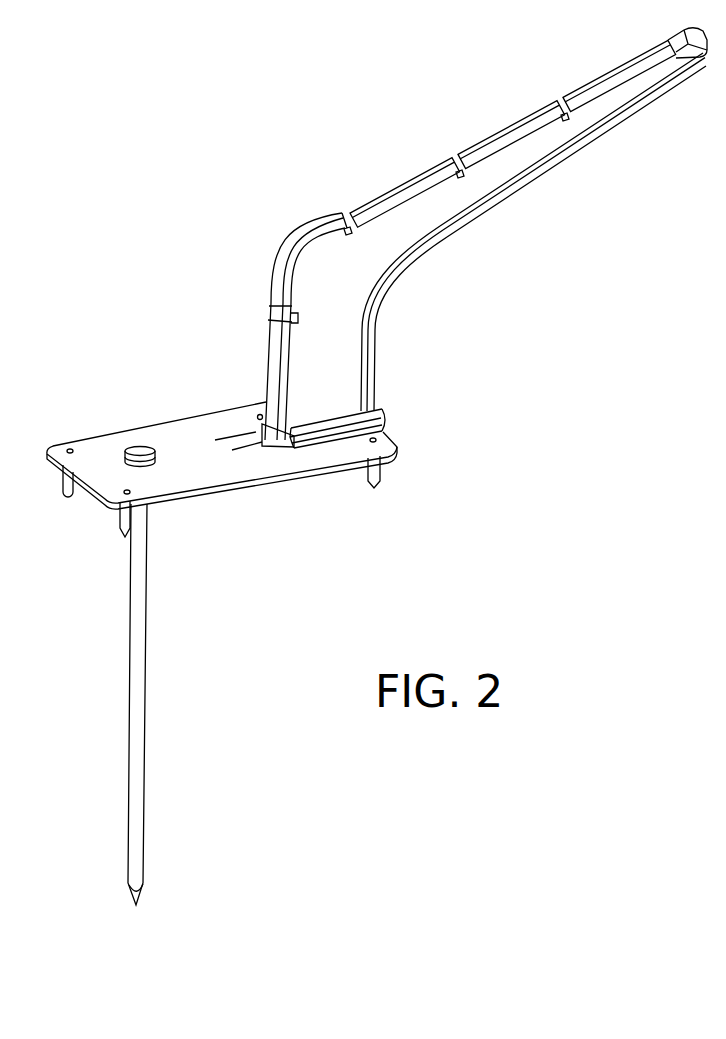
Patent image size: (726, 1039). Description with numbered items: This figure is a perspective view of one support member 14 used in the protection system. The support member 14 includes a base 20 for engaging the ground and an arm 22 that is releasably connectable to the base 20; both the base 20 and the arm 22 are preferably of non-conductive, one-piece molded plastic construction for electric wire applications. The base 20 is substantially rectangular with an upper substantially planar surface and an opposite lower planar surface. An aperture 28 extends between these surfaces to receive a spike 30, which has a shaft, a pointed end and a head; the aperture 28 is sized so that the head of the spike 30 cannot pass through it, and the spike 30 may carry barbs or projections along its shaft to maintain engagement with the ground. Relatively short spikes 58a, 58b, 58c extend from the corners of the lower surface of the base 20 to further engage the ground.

The support member 14 is at (493, 412).
The base 20 is at (93, 443).
The arm 22 is at (383, 256).
The aperture 28 is at (156, 465).
The spike 30 is at (138, 447).
The short spike 58a is at (383, 468).
The short spike 58b is at (118, 523).
The short spike 58c is at (61, 485).